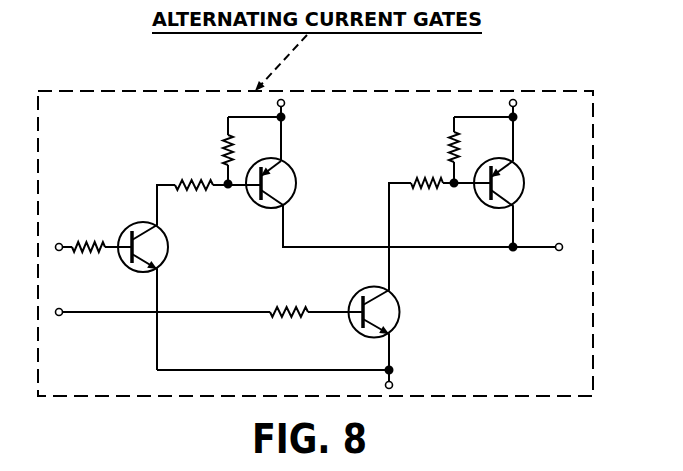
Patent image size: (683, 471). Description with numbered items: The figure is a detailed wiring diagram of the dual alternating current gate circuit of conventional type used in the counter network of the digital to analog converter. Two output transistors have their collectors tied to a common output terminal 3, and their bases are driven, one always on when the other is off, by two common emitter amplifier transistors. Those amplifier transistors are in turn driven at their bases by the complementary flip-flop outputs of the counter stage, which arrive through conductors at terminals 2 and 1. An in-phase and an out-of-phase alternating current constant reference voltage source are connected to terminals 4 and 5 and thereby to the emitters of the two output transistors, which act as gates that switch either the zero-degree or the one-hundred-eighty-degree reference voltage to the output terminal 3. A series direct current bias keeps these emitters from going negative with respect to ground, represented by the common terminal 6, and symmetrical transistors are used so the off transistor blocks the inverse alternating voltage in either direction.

The terminal 1 is at (64, 243).
The terminal 2 is at (63, 308).
The common output terminal 3 is at (558, 251).
The terminal 4 is at (285, 104).
The terminal 5 is at (517, 105).
The terminal 6 is at (397, 384).